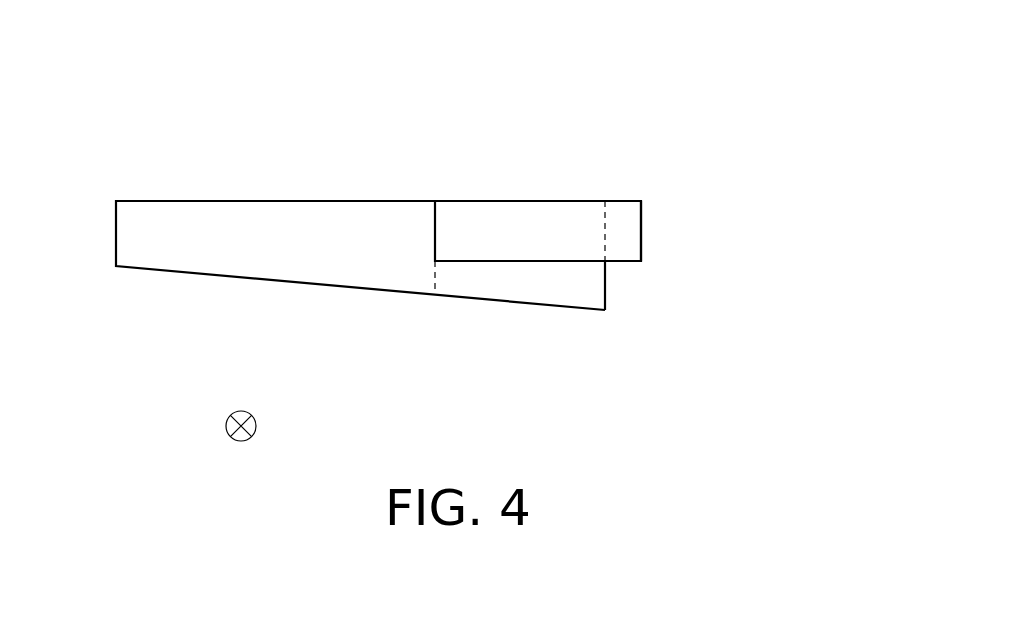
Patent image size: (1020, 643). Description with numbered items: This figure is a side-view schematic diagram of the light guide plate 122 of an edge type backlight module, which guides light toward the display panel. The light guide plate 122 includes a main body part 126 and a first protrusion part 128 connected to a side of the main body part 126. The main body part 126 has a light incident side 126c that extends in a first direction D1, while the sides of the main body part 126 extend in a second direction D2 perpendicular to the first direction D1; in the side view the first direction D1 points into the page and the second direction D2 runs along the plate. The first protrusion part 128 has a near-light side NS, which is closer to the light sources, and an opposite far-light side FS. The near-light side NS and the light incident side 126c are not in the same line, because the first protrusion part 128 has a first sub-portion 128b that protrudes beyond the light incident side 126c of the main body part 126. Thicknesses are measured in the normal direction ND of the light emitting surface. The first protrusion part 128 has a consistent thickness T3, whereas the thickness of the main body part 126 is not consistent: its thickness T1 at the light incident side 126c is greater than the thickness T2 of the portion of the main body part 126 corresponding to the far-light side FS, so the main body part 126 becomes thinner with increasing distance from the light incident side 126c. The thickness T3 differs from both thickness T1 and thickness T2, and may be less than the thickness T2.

The light guide plate 122 is at (466, 194).
The main body part 126 is at (213, 222).
The light incident side 126c is at (607, 282).
The first protrusion part 128 is at (482, 227).
The first sub-portion 128b is at (619, 226).
The far-light side FS is at (435, 229).
The near-light side NS is at (642, 225).
The thickness of the main body part at the light incident side T1 is at (697, 202).
The thickness of the portion of the main body part corresponding to the far-light si T2 is at (435, 293).
The thickness of the first protrusion part T3 is at (562, 202).
The normal direction ND is at (241, 411).
The first direction D1 is at (241, 442).
The second direction D2 is at (226, 426).